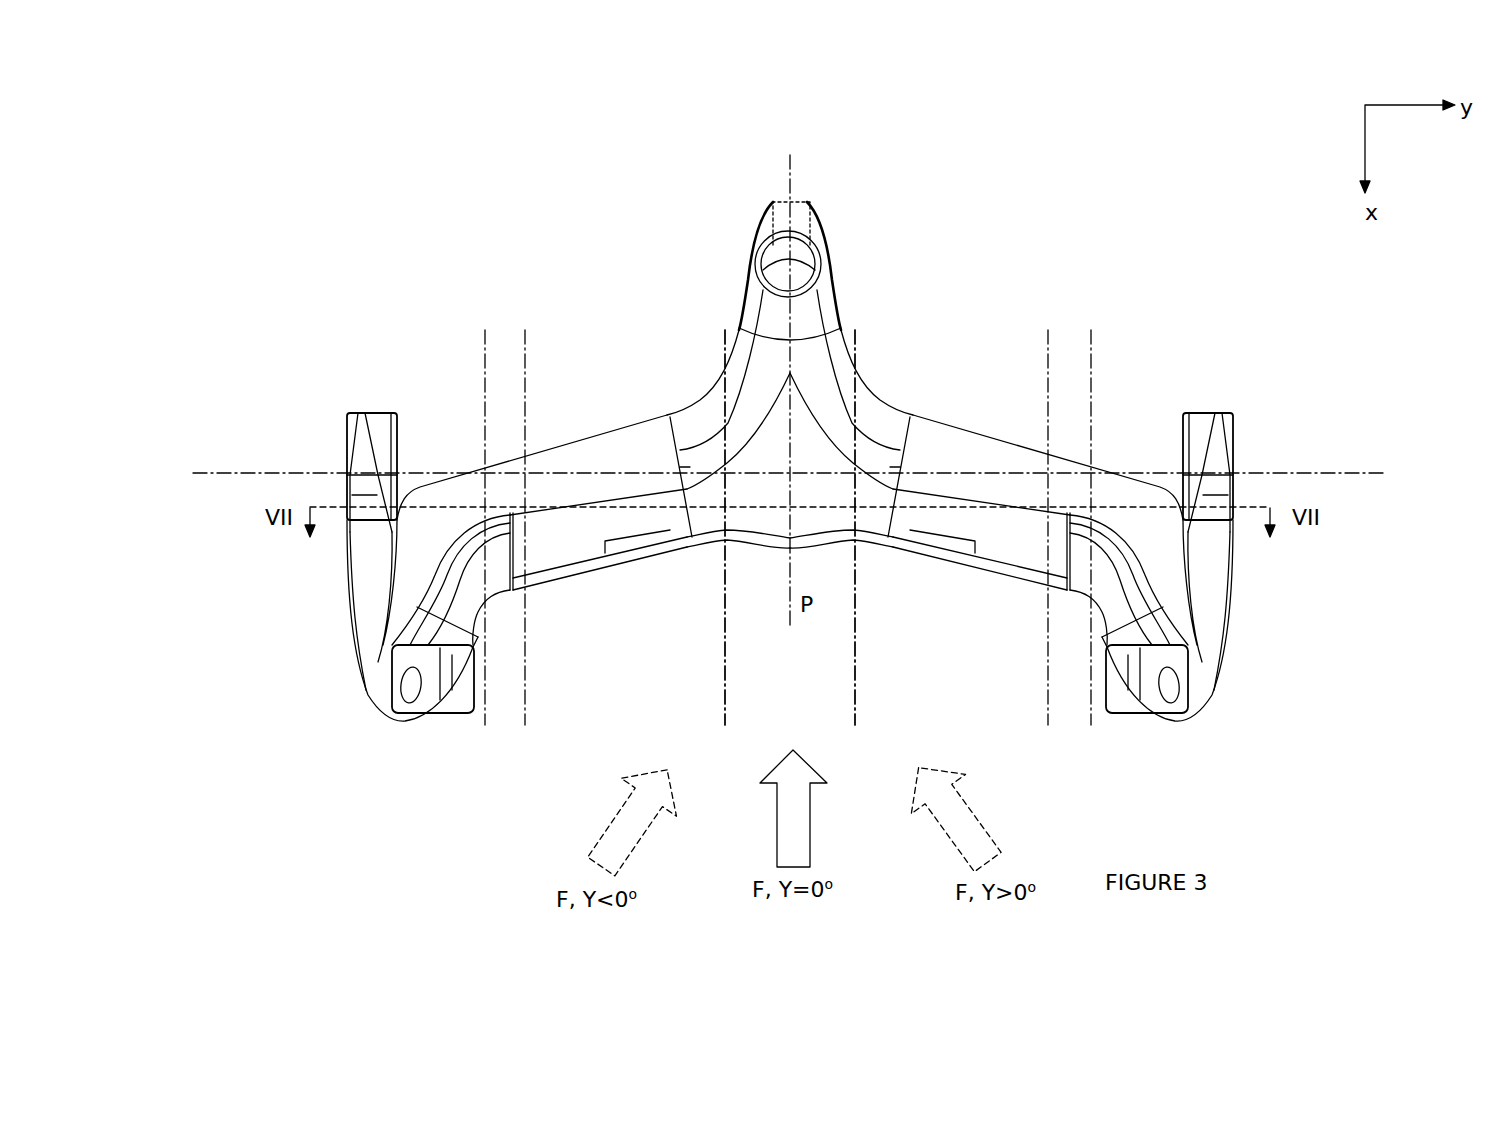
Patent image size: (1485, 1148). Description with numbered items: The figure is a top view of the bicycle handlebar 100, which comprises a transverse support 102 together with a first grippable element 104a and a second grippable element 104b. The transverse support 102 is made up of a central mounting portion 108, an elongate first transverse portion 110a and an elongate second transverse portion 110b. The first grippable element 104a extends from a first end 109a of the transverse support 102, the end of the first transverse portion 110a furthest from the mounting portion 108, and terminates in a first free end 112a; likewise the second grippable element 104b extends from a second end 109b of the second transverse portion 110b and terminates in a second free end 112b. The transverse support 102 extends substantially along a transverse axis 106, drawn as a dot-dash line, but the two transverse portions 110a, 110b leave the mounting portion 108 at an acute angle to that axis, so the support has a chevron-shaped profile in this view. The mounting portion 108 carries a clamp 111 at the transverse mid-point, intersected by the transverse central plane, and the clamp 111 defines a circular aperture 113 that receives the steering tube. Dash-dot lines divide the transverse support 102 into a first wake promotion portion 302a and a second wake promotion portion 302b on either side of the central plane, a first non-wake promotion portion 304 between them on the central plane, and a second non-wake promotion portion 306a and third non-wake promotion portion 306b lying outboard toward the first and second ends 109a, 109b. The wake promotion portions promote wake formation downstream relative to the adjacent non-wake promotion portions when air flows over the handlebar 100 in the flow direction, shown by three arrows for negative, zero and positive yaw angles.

The handlebar 100 is at (1025, 196).
The transverse support 102 is at (769, 270).
The first grippable element 104a is at (362, 575).
The second grippable element 104b is at (1213, 575).
The transverse axis 106 is at (193, 473).
The mounting portion 108 is at (832, 389).
The first end 109a is at (539, 666).
The second end 109b is at (1040, 666).
The first transverse portion 110a is at (610, 452).
The second transverse portion 110b is at (955, 450).
The clamp 111 is at (773, 224).
The first free end 112a is at (373, 413).
The second free end 112b is at (1205, 413).
The circular aperture 113 is at (802, 267).
The first wake promotion portion 302a is at (605, 527).
The second wake promotion portion 302b is at (973, 527).
The first non-wake promotion portion 304 is at (790, 527).
The second non-wake promotion portion 306a is at (503, 707).
The third non-wake promotion portion 306b is at (1070, 700).